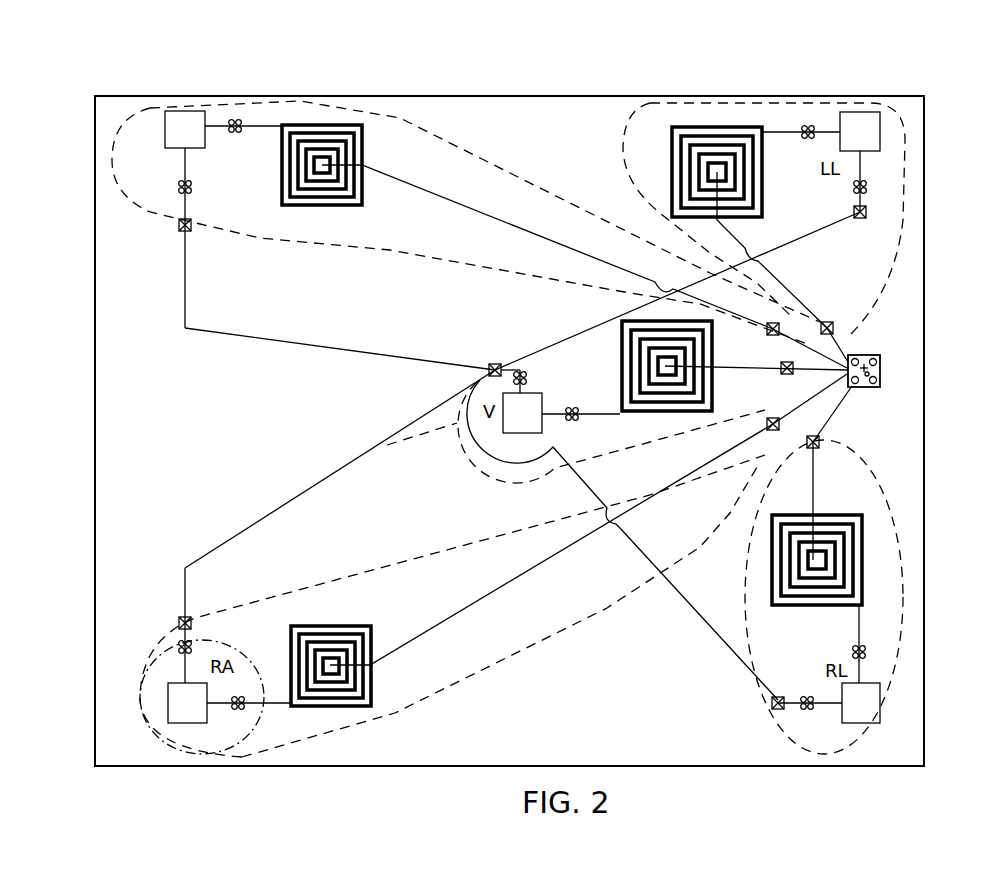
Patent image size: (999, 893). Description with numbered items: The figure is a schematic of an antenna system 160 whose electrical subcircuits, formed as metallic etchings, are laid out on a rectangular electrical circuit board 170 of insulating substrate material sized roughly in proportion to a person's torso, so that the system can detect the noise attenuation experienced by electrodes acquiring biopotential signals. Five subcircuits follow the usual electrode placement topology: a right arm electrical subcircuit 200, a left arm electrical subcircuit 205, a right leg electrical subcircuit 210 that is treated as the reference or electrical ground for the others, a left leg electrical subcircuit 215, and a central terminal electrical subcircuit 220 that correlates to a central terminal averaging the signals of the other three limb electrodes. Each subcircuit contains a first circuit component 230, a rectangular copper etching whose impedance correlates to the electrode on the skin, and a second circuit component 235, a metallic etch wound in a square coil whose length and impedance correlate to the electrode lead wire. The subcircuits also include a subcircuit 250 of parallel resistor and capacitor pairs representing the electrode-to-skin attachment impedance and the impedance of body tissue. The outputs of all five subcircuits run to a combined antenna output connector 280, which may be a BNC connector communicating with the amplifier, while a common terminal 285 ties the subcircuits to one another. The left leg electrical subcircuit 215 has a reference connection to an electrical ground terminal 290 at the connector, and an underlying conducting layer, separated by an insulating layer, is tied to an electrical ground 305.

The antenna system 160 is at (505, 86).
The electrical circuit board 170 is at (925, 468).
The right arm electrical subcircuit 200 is at (430, 540).
The left arm electrical subcircuit 205 is at (502, 158).
The right leg electrical subcircuit 210 is at (905, 605).
The left leg electrical subcircuit 215 is at (897, 126).
The central terminal electrical subcircuit 220 is at (387, 445).
The first circuit component 230 is at (185, 110).
The second circuit component 235 is at (315, 125).
The subcircuit 250 is at (250, 757).
The combined antenna output connector 280 is at (877, 355).
The common terminal 285 is at (491, 361).
The electrical ground terminal 290 is at (857, 390).
The electrical ground 305 is at (880, 375).